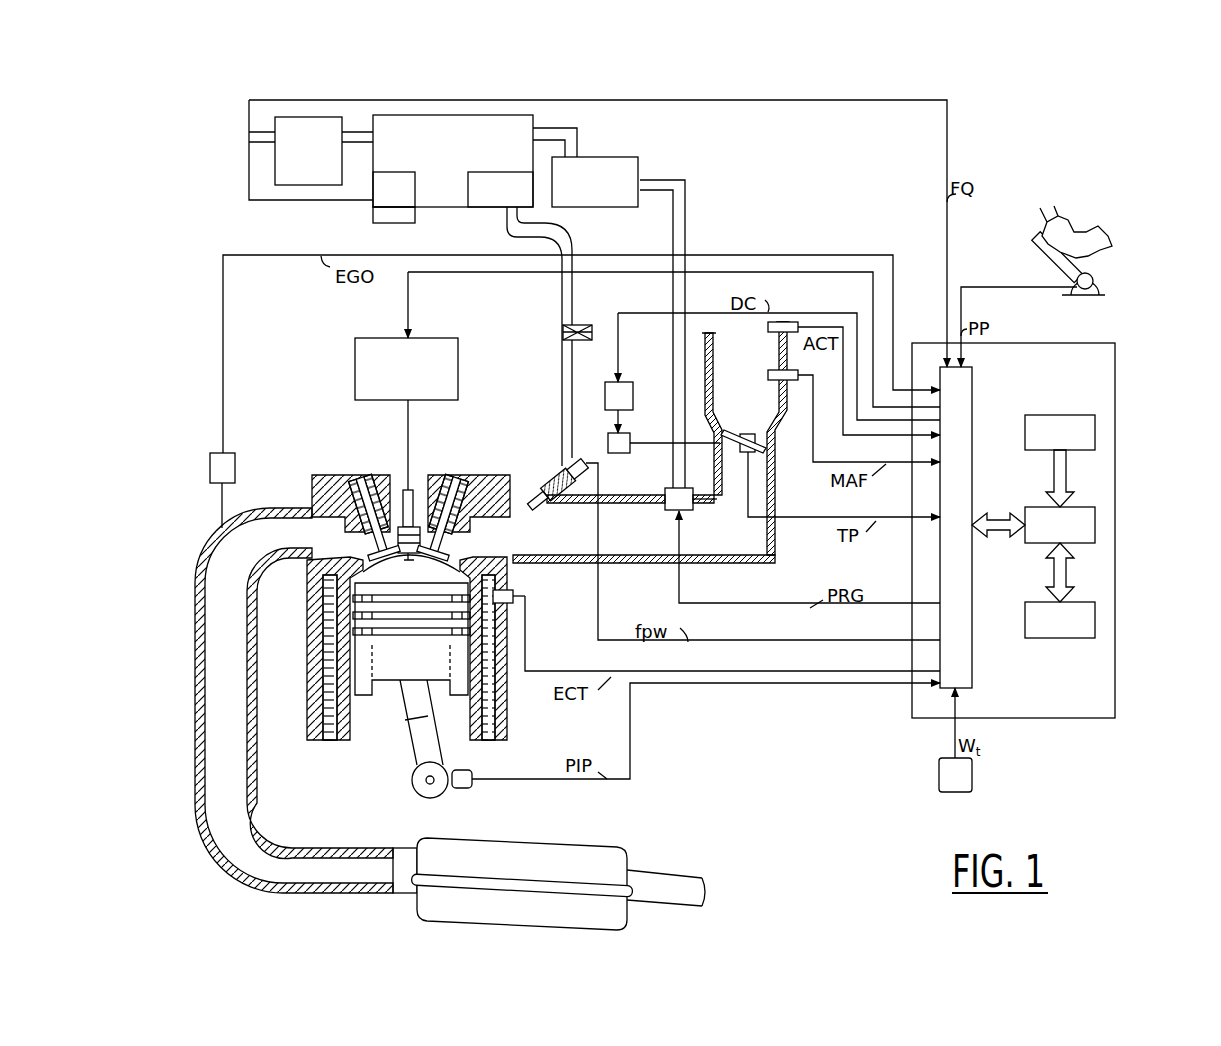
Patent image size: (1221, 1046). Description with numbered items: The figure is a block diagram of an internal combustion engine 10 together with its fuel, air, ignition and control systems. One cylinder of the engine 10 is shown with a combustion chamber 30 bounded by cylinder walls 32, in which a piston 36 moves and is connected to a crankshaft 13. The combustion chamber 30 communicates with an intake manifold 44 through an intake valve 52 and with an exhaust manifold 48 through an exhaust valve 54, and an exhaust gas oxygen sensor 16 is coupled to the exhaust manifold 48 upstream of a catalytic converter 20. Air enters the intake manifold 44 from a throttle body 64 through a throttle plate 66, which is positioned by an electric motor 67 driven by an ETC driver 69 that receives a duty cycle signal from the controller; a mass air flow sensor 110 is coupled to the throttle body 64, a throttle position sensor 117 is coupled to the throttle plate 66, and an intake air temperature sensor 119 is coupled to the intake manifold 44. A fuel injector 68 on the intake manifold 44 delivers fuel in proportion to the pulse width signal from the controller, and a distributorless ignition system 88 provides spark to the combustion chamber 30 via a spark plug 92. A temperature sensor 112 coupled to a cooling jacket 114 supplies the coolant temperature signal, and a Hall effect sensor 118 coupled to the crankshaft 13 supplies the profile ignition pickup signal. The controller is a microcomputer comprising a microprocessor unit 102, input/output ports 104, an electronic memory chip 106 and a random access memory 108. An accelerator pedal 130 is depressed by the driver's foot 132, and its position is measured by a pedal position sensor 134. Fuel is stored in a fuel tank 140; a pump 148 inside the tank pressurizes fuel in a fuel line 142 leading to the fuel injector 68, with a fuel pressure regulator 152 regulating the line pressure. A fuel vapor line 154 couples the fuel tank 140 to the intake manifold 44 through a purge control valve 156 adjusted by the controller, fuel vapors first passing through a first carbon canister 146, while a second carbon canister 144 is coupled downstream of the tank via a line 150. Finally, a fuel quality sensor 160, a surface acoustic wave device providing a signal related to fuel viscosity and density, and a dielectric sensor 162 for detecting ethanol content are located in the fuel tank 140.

The internal combustion engine 10 is at (352, 804).
The crankshaft 13 is at (413, 787).
The exhaust gas oxygen sensor 16 is at (210, 466).
The catalytic converter 20 is at (572, 845).
The combustion chamber 30 is at (387, 583).
The cylinder walls 32 is at (352, 735).
The piston 36 is at (400, 670).
The intake manifold 44 is at (730, 540).
The exhaust manifold 48 is at (212, 572).
The intake valve 52 is at (462, 550).
The exhaust valve 54 is at (360, 550).
The throttle body 64 is at (712, 357).
The throttle plate 66 is at (731, 430).
The electric motor 67 is at (608, 438).
The fuel injector 68 is at (537, 508).
The ETC driver 69 is at (633, 400).
The distributorless ignition system 88 is at (436, 338).
The spark plug 92 is at (414, 495).
The microprocessor unit 102 is at (1038, 505).
The input/output ports 104 is at (975, 378).
The electronic memory chip 106 is at (1064, 413).
The random access memory 108 is at (1065, 638).
The mass air flow sensor 110 is at (772, 368).
The temperature sensor 112 is at (514, 592).
The cooling jacket 114 is at (500, 719).
The throttle position sensor 117 is at (758, 452).
The Hall effect sensor 118 is at (468, 790).
The intake air temperature sensor 119 is at (784, 322).
The accelerator pedal 130 is at (1036, 240).
The driver's foot 132 is at (1100, 228).
The pedal position sensor 134 is at (1095, 283).
The fuel tank 140 is at (452, 115).
The fuel line 142 is at (562, 298).
The second carbon canister 144 is at (318, 96).
The first carbon canister 146 is at (612, 157).
The pump 148 is at (487, 172).
The line 150 is at (355, 131).
The fuel pressure regulator 152 is at (563, 336).
The fuel vapor line 154 is at (690, 193).
The purge control valve 156 is at (667, 488).
The fuel quality sensor 160 is at (404, 172).
The dielectric sensor 162 is at (373, 216).